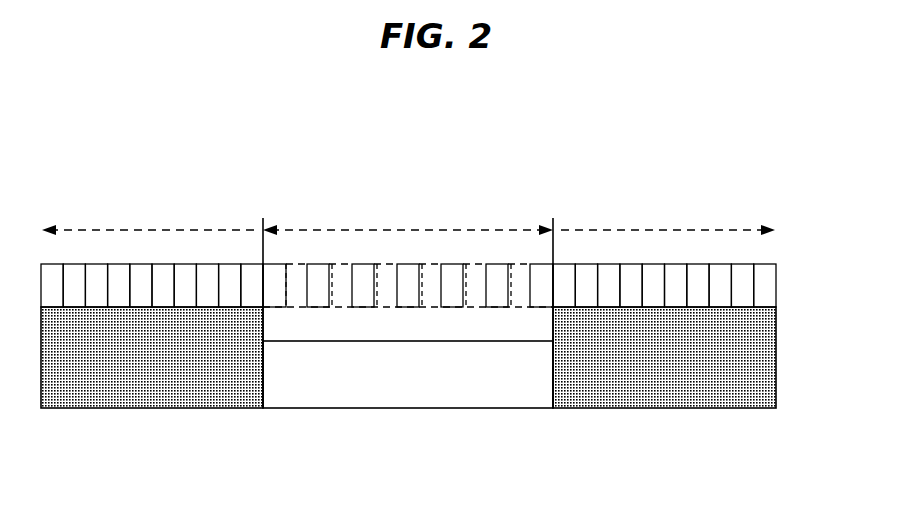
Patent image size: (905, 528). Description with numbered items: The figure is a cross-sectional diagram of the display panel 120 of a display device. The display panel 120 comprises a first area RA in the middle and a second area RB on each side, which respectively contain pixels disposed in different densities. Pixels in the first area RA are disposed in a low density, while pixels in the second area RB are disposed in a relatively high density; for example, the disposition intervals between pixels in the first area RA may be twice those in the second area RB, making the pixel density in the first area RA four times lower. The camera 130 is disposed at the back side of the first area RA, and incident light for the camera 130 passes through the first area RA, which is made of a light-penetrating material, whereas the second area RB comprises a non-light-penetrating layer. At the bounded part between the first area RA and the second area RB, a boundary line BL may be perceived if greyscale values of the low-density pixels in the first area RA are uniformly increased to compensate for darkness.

The display panel 120 is at (777, 288).
The camera 130 is at (513, 408).
The boundary line BL is at (413, 268).
The first area RA is at (408, 213).
The second area RB is at (408, 215).